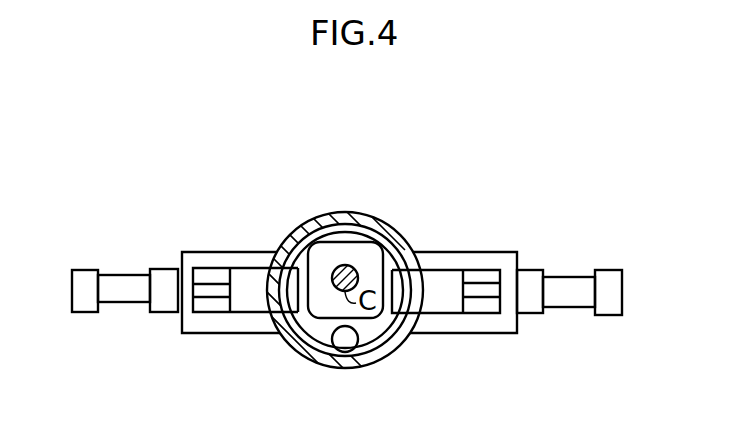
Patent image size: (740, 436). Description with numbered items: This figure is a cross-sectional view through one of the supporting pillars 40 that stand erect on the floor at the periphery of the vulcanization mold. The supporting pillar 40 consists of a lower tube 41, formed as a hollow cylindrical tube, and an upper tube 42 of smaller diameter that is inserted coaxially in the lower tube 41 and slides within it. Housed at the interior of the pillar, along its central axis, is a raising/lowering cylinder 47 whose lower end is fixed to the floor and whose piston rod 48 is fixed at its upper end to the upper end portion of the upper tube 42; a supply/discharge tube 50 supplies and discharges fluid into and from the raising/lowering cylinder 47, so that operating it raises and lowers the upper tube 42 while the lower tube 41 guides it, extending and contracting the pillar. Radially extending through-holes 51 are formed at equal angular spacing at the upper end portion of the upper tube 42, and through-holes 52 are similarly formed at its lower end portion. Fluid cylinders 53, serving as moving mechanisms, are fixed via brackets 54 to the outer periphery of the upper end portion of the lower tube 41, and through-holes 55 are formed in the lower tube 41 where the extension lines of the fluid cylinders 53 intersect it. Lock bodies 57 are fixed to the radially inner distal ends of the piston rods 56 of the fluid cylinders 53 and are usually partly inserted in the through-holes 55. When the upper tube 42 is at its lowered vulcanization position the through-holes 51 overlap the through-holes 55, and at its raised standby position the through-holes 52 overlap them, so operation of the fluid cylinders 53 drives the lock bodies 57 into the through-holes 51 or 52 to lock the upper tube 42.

The supporting pillar 40 is at (410, 226).
The lower tube 41 is at (350, 242).
The upper tube 42 is at (303, 240).
The raising/lowering cylinder 47 is at (381, 233).
The piston rod 48 is at (347, 266).
The supply/discharge tube 50 is at (345, 340).
The through-hole 51 is at (272, 333).
The through-hole 52 is at (275, 388).
The fluid cylinder 53 is at (120, 284).
The bracket 54 is at (221, 326).
The through-hole 55 is at (436, 262).
The piston rod 56 is at (207, 290).
The lock body 57 is at (296, 280).